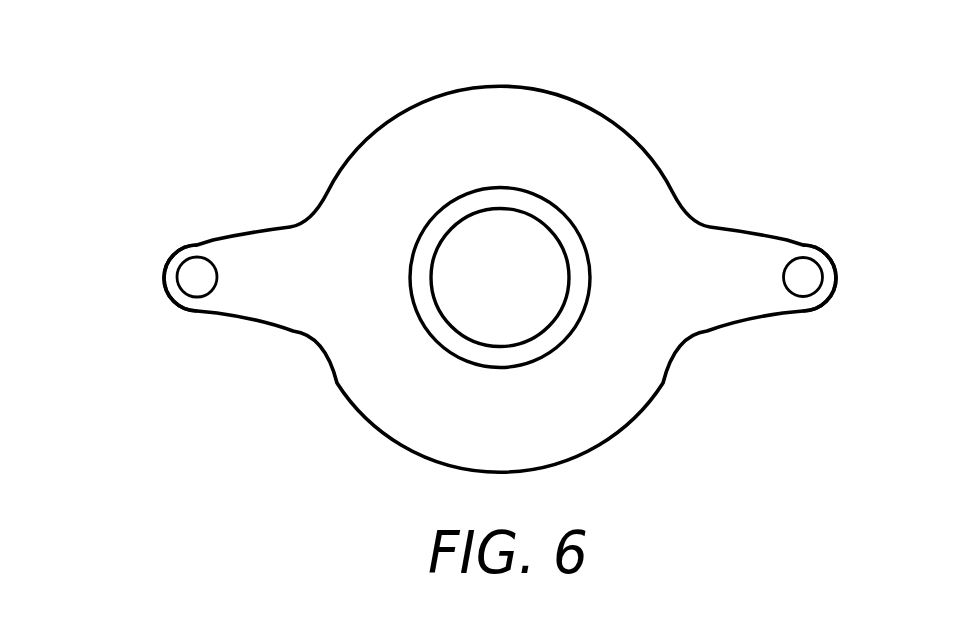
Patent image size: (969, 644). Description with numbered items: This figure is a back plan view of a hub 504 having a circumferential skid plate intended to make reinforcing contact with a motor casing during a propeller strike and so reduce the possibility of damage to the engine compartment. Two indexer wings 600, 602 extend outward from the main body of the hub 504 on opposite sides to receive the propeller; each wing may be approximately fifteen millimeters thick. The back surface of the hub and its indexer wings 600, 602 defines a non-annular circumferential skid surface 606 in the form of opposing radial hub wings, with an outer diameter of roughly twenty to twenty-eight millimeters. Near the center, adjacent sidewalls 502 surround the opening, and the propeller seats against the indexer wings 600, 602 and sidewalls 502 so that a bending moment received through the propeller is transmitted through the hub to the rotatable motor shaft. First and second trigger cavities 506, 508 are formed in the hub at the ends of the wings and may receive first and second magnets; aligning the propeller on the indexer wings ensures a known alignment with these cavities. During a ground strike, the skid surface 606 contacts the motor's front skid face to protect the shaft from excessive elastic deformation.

The sidewalls 502 is at (568, 205).
The hub 504 is at (445, 245).
The first trigger cavity 506 is at (199, 280).
The second trigger cavity 508 is at (803, 275).
The indexer wing 600 is at (793, 240).
The indexer wing 602 is at (203, 237).
The circumferential skid surface 606 is at (447, 120).